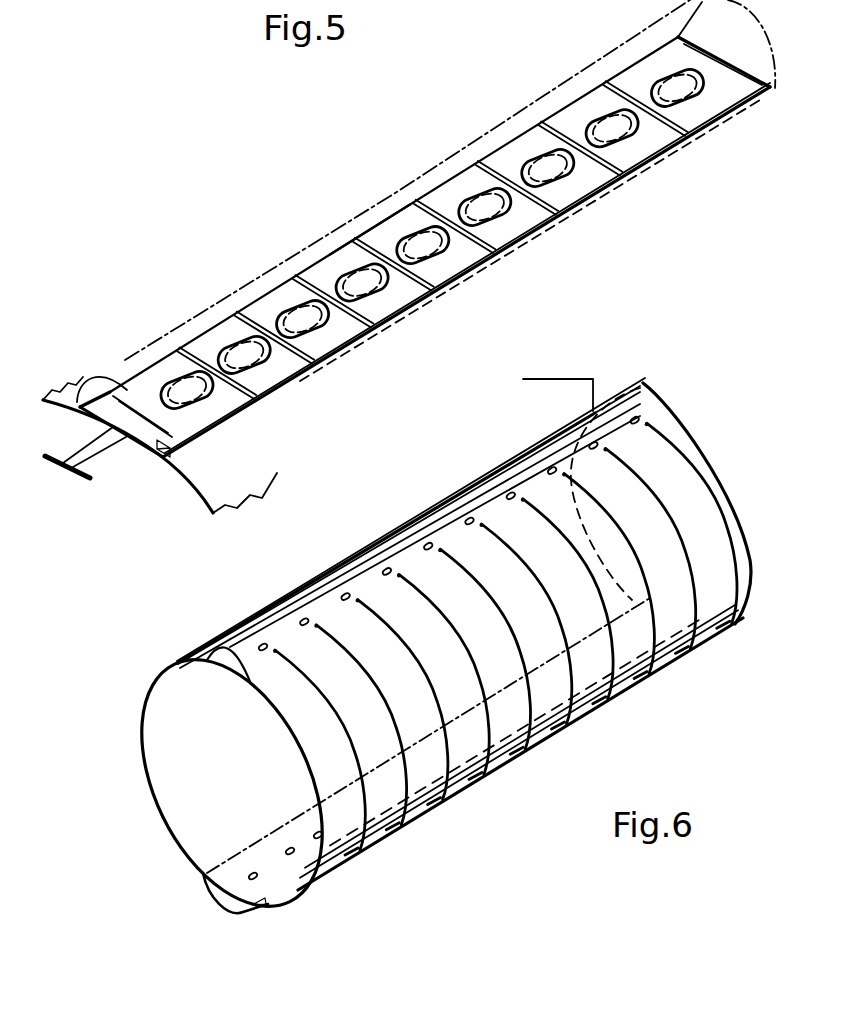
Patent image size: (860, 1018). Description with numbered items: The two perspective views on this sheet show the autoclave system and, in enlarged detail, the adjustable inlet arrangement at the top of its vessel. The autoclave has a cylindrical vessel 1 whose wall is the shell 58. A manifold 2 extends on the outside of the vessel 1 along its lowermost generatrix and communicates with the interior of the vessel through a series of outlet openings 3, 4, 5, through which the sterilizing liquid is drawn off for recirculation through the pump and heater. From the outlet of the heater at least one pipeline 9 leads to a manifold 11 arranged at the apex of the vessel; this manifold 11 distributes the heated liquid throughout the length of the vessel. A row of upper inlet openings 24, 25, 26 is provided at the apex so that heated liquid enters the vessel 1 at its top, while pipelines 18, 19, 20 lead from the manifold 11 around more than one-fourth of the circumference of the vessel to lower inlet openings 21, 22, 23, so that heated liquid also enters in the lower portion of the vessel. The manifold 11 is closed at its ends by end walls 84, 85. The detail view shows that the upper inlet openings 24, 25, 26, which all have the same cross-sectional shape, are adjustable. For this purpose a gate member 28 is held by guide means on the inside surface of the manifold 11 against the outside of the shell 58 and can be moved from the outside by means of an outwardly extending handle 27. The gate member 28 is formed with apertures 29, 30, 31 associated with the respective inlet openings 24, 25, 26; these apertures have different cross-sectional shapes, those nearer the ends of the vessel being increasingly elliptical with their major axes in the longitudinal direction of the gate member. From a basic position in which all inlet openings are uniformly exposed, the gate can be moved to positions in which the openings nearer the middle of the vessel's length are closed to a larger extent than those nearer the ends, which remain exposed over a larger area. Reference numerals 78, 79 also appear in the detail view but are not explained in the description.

In FIG. 6, the vessel 1 is at (160, 783).
In FIG. 6, the manifold 2 is at (258, 920).
In FIG. 6, the outlet opening 3 is at (249, 874).
In FIG. 6, the outlet opening 4 is at (287, 848).
In FIG. 6, the outlet opening 5 is at (315, 832).
In FIG. 6, the pipeline 9 is at (556, 379).
In FIG. 5, the manifold 11 is at (485, 142).
In FIG. 6, the manifold 11 is at (252, 628).
In FIG. 6, the pipeline 18 is at (358, 745).
In FIG. 6, the pipeline 19 is at (400, 710).
In FIG. 6, the pipeline 20 is at (437, 683).
In FIG. 6, the lower inlet opening 21 is at (340, 858).
In FIG. 6, the lower inlet opening 22 is at (397, 823).
In FIG. 6, the lower inlet opening 23 is at (425, 800).
In FIG. 5, the upper inlet opening 24 is at (186, 398).
In FIG. 6, the upper inlet opening 24 is at (265, 643).
In FIG. 5, the upper inlet opening 25 is at (247, 358).
In FIG. 6, the upper inlet opening 25 is at (306, 618).
In FIG. 5, the upper inlet opening 26 is at (318, 322).
In FIG. 6, the upper inlet opening 26 is at (347, 593).
In FIG. 5, the handle 27 is at (47, 452).
In FIG. 5, the gate member 28 is at (370, 230).
In FIG. 5, the aperture 29 is at (185, 372).
In FIG. 5, the aperture 30 is at (246, 335).
In FIG. 5, the aperture 31 is at (302, 300).
In FIG. 5, the shell 58 is at (202, 485).
In FIG. 6, the shell 58 is at (147, 693).
In FIG. 5, the end flange 78 is at (100, 392).
In FIG. 5, the end flange 79 is at (175, 428).
In FIG. 6, the end wall 84 is at (222, 655).
In FIG. 6, the end wall 85 is at (665, 393).